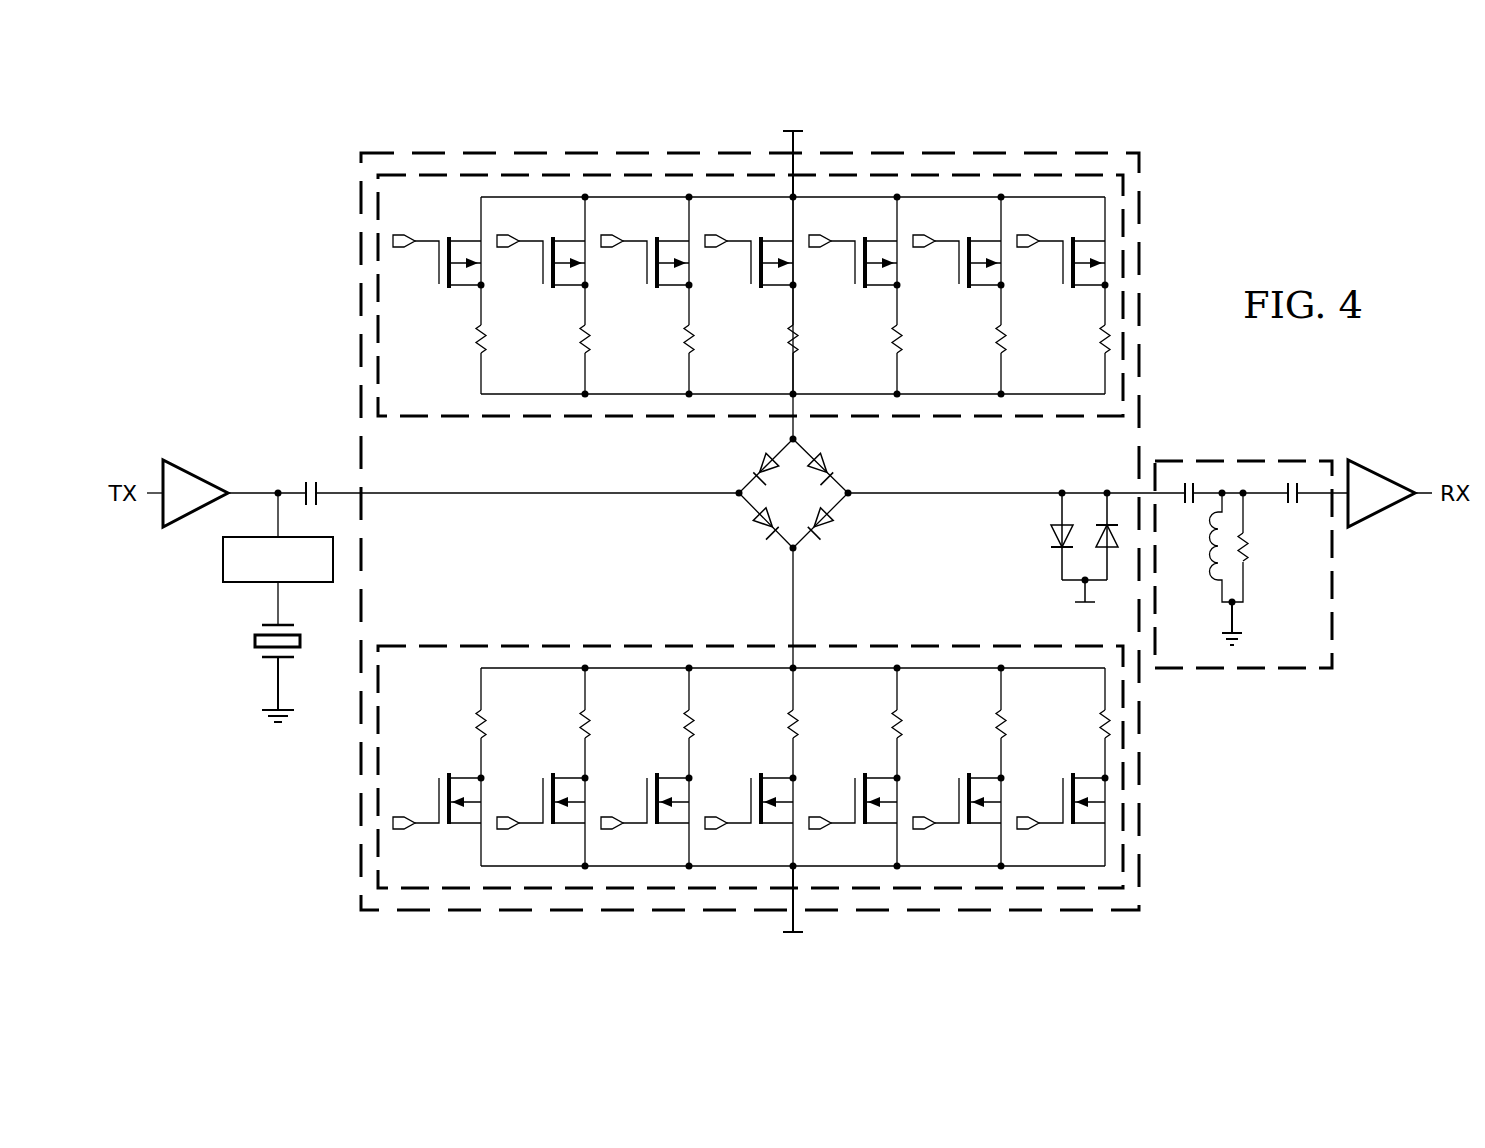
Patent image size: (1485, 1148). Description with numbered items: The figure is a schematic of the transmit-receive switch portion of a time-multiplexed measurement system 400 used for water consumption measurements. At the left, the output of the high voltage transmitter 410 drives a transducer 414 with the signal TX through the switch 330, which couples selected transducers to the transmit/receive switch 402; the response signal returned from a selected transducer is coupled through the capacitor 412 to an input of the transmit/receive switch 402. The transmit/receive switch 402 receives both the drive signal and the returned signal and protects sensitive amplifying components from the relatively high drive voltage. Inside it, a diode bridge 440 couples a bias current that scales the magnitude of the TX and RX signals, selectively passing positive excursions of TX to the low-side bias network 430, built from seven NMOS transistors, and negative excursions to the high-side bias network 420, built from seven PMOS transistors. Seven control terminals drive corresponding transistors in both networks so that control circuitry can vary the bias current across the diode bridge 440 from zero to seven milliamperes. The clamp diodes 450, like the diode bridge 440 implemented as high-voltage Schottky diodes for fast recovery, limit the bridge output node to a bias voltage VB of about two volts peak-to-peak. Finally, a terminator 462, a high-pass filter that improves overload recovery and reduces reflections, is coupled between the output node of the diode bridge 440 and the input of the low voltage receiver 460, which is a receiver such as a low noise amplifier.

The time-multiplexed measurement system 400 is at (291, 158).
The transmit/receive (T/R) switch 402 is at (358, 373).
The high voltage transmitter (HV TX) 410 is at (196, 471).
The capacitor 412 is at (310, 480).
The transducer 414 is at (255, 643).
The switch 330 is at (223, 560).
The high-side bias network 420 is at (566, 418).
The low-side bias network 430 is at (567, 644).
The diode bridge 440 is at (737, 482).
The clamp diodes (voltage clamp) 450 is at (1037, 562).
The low voltage receiver (LV RX) 460 is at (1378, 471).
The terminator 462 is at (1270, 674).